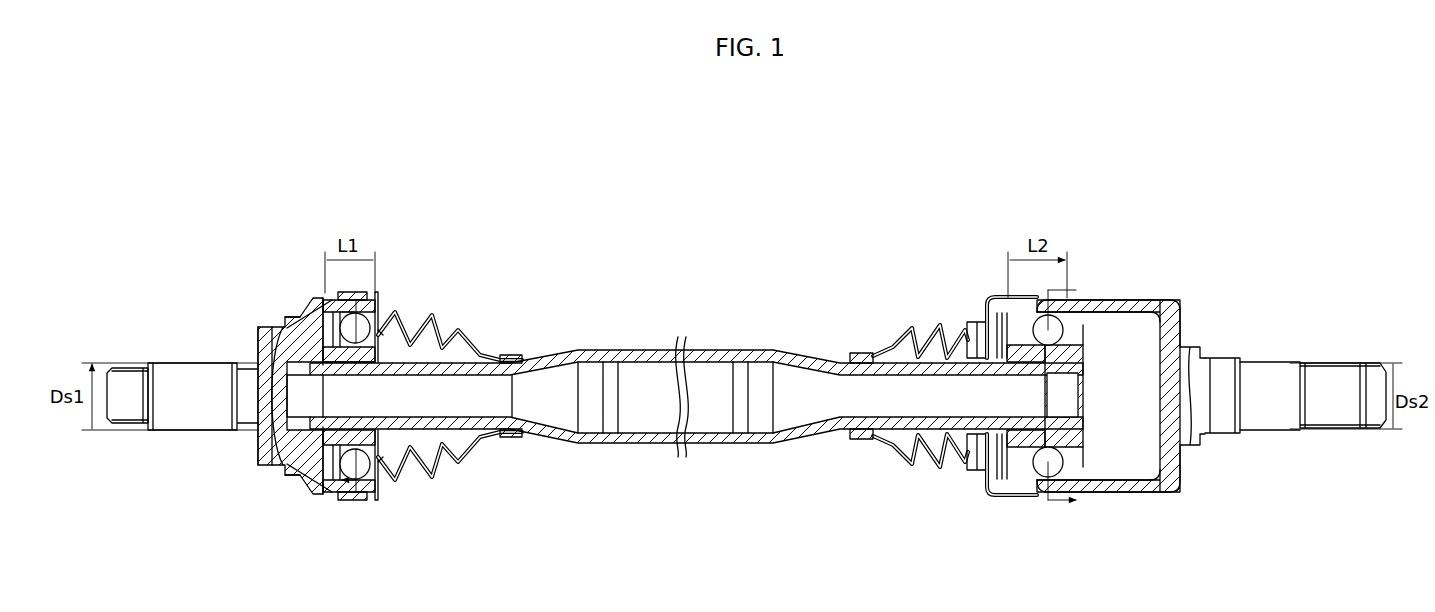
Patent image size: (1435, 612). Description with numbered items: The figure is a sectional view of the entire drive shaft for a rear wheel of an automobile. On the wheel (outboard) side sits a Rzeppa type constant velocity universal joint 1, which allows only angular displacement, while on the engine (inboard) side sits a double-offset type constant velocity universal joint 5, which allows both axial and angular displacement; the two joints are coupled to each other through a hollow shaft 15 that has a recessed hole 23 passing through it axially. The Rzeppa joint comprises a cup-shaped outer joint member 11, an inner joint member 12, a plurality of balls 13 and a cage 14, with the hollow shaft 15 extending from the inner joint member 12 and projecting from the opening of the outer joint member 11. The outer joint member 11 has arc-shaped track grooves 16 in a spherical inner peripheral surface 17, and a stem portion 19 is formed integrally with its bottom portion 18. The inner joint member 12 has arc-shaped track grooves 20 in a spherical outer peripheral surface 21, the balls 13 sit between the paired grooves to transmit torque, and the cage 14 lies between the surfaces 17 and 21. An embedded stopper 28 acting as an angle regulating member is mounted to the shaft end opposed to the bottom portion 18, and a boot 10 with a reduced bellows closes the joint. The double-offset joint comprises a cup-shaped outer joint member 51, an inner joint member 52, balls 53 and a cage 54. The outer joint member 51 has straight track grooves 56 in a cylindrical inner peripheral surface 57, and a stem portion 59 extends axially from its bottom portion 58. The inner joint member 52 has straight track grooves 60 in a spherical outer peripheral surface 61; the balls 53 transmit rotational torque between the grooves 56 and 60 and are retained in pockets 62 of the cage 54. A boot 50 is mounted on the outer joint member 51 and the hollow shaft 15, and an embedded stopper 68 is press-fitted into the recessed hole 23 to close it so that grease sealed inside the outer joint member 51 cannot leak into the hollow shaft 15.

The Rzeppa type constant velocity universal joint 1 is at (426, 274).
The double-offset type constant velocity universal joint 5 is at (1166, 282).
The boot 10 is at (450, 378).
The outer joint member 11 is at (275, 381).
The inner joint member 12 is at (361, 394).
The balls 13 is at (372, 312).
The cage 14 is at (390, 332).
The hollow shaft 15 is at (685, 404).
The track grooves 16 is at (327, 325).
The spherical inner peripheral surface 17 is at (326, 462).
The bottom portion 18 is at (274, 457).
The stem portion 19 is at (190, 420).
The track grooves 20 is at (378, 343).
The spherical outer peripheral surface 21 is at (277, 341).
The recessed hole 23 is at (647, 357).
The embedded stopper 28 is at (330, 395).
The boot 50 is at (926, 343).
The outer joint member 51 is at (1138, 397).
The inner joint member 52 is at (982, 465).
The balls 53 is at (1043, 470).
The cage 54 is at (1092, 332).
The track grooves 56 is at (1107, 313).
The cylindrical inner peripheral surface 57 is at (1120, 463).
The bottom portion 58 is at (1173, 457).
The stem portion 59 is at (1279, 416).
The track grooves 60 is at (1005, 347).
The spherical outer peripheral surface 61 is at (1026, 330).
The pockets 62 is at (1068, 450).
The embedded stopper 68 is at (1048, 392).